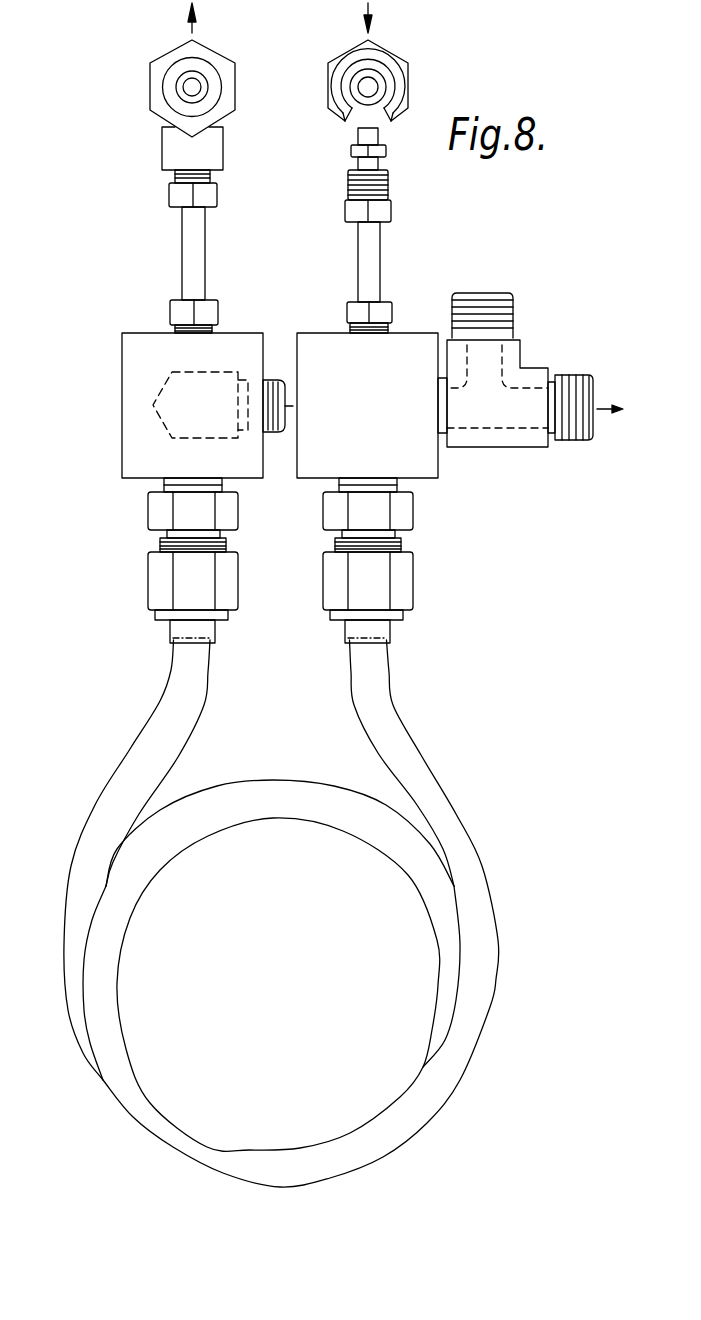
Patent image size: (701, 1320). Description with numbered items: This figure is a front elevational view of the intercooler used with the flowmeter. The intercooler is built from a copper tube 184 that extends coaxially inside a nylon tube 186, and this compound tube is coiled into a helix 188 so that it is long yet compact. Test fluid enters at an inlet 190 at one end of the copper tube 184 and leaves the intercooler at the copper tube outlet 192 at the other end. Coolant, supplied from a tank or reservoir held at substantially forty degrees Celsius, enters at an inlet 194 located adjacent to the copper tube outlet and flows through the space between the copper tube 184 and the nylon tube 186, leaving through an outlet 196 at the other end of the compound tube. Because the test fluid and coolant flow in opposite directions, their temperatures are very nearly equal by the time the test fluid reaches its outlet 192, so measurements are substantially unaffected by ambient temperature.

The copper tube 184 is at (365, 249).
The nylon tube 186 is at (469, 855).
The helix 188 is at (413, 1117).
The inlet 190 is at (350, 95).
The outlet of the copper tube 192 is at (176, 93).
The inlet 194 is at (252, 465).
The outlet 196 is at (503, 433).